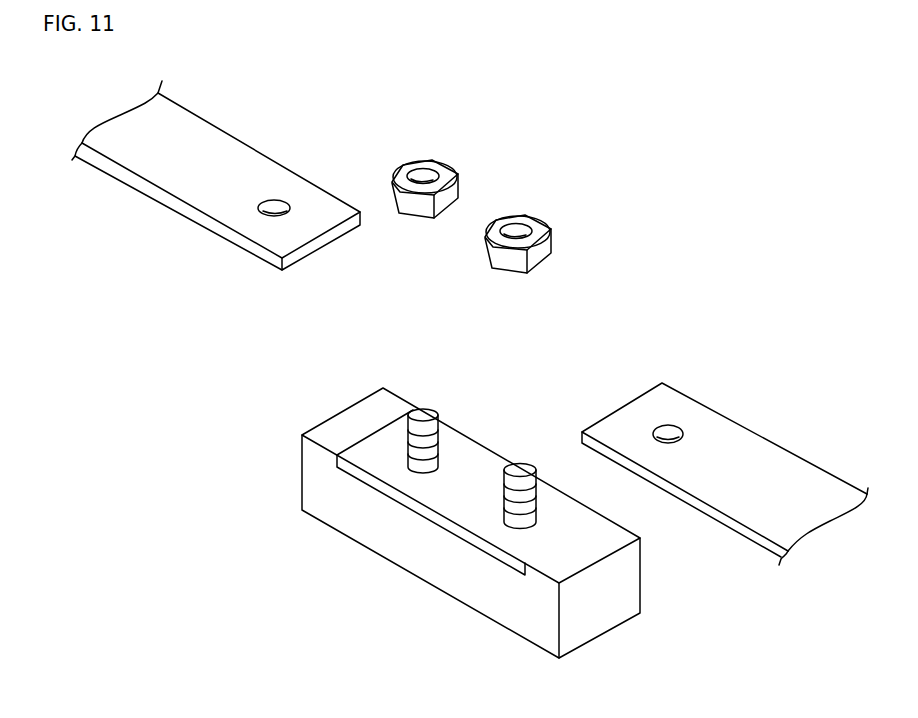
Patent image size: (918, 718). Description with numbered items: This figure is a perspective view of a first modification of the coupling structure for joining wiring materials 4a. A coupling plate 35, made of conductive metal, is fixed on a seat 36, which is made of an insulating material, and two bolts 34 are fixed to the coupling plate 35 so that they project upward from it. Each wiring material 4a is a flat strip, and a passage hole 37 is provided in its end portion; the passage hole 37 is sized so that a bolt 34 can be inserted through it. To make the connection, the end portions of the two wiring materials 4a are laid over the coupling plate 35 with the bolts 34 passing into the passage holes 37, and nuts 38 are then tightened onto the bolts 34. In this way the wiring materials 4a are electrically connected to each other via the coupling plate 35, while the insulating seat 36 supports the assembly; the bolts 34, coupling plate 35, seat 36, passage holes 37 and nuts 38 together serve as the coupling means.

The wiring material 4a is at (138, 178).
The bolt 34 is at (424, 413).
The coupling plate 35 is at (443, 493).
The seat 36 is at (623, 585).
The passage hole 37 is at (277, 200).
The nut 38 is at (435, 163).